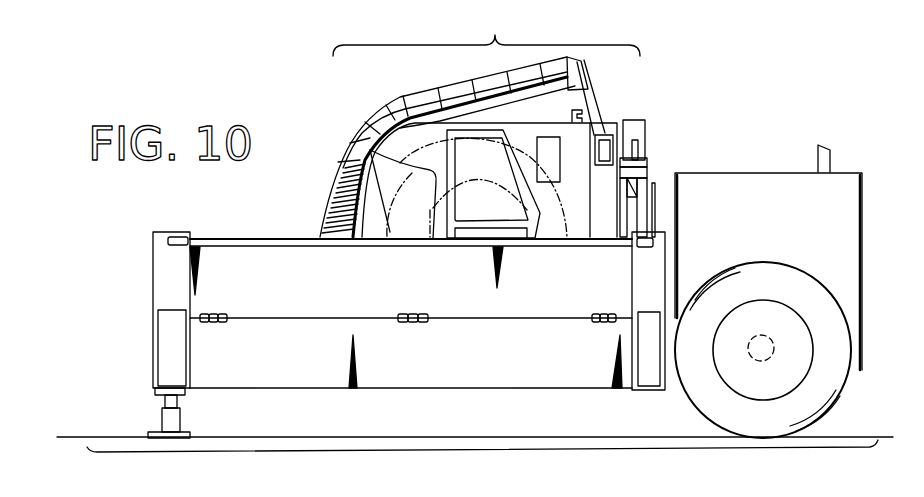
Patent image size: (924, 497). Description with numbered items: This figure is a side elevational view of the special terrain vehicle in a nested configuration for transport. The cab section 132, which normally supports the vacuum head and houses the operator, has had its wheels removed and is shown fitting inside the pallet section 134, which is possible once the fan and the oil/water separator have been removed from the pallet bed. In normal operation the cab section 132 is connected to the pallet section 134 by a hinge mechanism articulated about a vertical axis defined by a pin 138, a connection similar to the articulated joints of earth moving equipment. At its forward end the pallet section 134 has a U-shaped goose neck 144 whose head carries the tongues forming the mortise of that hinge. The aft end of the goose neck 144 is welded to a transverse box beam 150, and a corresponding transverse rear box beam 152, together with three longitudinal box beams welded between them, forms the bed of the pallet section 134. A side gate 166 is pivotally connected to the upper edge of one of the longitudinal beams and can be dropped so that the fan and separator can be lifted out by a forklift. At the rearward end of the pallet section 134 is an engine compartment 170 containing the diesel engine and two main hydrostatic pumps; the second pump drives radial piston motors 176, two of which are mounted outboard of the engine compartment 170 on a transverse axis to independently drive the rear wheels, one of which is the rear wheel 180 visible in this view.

The cab section 132 is at (480, 123).
The pallet section 134 is at (480, 452).
The pin 138 is at (645, 193).
The U-shaped goose neck 144 is at (644, 130).
The transverse box beam 150 is at (503, 361).
The transverse rear box beam 152 is at (653, 392).
The side gate 166 is at (560, 288).
The engine compartment 170 is at (742, 177).
The radial piston motors 176 is at (775, 344).
The rear wheel 180 is at (768, 262).